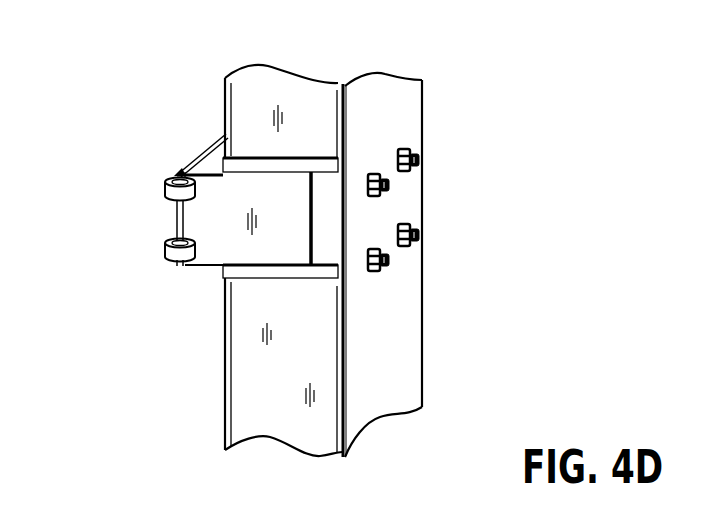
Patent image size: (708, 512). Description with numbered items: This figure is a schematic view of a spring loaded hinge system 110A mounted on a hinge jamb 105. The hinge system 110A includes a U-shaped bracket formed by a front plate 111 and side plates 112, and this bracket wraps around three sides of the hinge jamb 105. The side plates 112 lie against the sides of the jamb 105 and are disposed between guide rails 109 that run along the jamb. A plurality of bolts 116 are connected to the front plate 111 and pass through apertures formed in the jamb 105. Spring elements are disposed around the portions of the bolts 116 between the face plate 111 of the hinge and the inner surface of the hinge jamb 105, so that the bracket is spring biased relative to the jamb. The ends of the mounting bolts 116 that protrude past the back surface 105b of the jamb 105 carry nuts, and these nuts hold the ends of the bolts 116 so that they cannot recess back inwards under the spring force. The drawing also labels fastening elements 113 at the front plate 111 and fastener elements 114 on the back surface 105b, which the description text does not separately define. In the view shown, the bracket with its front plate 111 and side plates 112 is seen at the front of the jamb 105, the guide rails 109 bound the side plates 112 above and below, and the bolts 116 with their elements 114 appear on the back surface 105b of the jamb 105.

The hinge jamb 105 is at (425, 356).
The back surface 105b is at (407, 286).
The guide rails 109 is at (248, 158).
The spring loaded hinge system 110A is at (138, 198).
The front plate 111 is at (200, 152).
The side plates 112 is at (215, 257).
The nut 113 is at (164, 252).
The bolt 114 is at (398, 150).
The bolts 116 is at (420, 160).